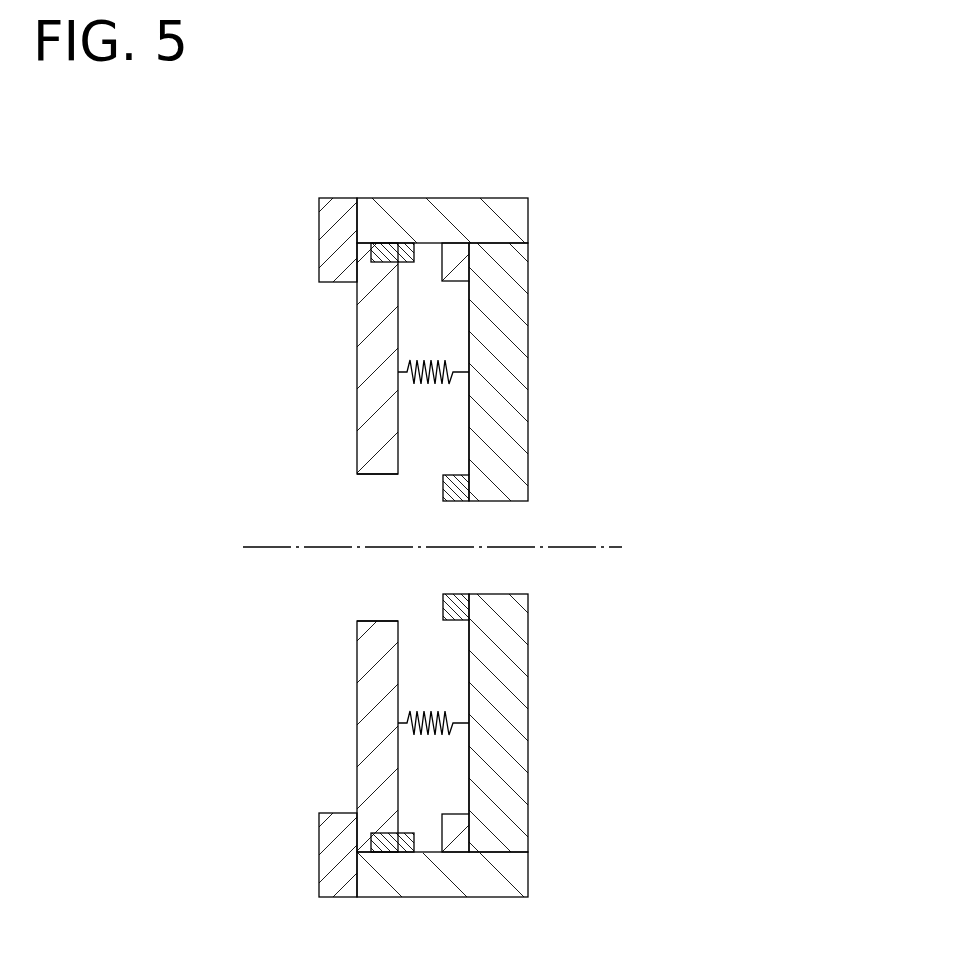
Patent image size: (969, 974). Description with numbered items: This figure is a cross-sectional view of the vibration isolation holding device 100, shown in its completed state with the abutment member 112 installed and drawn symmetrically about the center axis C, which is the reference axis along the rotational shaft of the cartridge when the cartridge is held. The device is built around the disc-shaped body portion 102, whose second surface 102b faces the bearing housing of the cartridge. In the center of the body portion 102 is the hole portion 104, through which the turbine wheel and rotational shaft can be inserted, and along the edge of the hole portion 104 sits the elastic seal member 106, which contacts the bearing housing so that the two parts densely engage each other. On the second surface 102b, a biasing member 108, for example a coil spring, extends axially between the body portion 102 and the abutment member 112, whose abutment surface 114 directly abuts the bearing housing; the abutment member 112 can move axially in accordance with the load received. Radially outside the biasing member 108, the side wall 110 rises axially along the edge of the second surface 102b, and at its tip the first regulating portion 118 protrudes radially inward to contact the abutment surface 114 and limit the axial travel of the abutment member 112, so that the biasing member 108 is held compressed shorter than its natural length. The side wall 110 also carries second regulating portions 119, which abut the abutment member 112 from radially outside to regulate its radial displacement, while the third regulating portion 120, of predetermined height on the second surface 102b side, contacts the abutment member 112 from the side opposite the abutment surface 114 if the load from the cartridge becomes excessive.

The vibration isolation holding device 100 is at (632, 138).
The body portion 102 is at (528, 340).
The second surface 102b is at (467, 430).
The hole portion 104 is at (326, 565).
The seal member 106 is at (443, 487).
The biasing member 108 is at (408, 362).
The side wall 110 is at (402, 198).
The abutment member 112 is at (357, 358).
The abutment surface 114 is at (357, 451).
The first regulating portion 118 is at (319, 243).
The second regulating portion 119 is at (383, 243).
The third regulating portion 120 is at (455, 243).
The center axis C is at (600, 547).